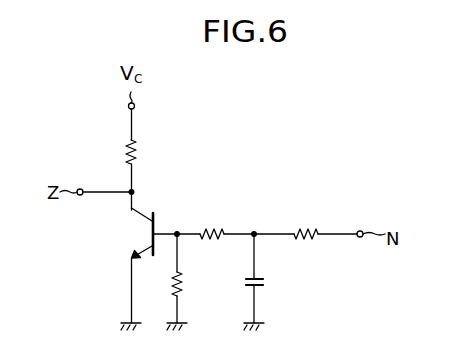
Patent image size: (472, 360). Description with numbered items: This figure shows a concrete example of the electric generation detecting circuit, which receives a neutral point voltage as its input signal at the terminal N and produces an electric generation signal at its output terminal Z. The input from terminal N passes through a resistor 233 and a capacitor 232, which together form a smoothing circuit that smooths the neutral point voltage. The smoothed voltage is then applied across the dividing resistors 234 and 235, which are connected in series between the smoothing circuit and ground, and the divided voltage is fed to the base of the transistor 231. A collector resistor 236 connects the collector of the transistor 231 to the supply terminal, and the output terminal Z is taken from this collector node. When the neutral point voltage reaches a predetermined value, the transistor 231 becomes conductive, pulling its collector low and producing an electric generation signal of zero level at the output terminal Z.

The transistor 231 is at (150, 236).
The capacitor 232 is at (264, 281).
The resistor 233 is at (312, 229).
The dividing resistor 234 is at (216, 229).
The dividing resistor 235 is at (182, 279).
The collector resistor 236 is at (141, 147).